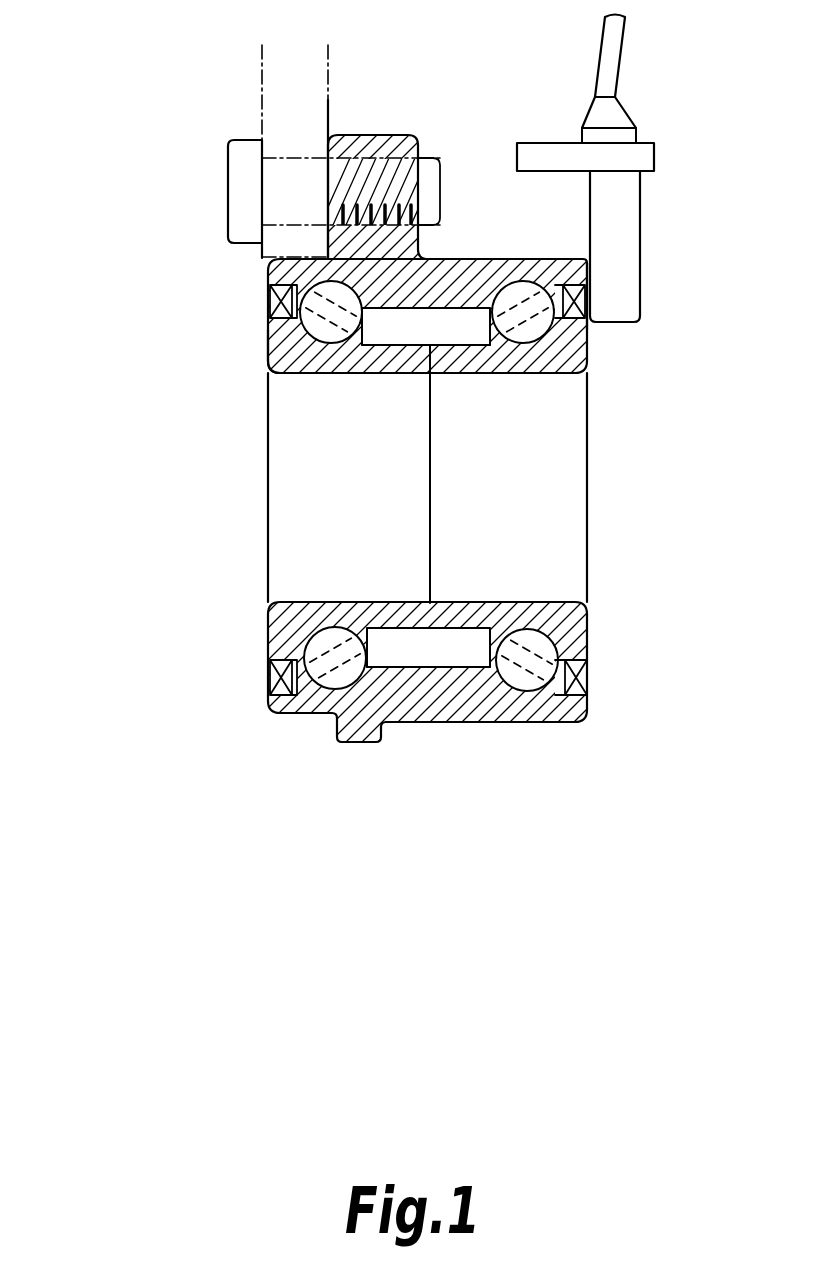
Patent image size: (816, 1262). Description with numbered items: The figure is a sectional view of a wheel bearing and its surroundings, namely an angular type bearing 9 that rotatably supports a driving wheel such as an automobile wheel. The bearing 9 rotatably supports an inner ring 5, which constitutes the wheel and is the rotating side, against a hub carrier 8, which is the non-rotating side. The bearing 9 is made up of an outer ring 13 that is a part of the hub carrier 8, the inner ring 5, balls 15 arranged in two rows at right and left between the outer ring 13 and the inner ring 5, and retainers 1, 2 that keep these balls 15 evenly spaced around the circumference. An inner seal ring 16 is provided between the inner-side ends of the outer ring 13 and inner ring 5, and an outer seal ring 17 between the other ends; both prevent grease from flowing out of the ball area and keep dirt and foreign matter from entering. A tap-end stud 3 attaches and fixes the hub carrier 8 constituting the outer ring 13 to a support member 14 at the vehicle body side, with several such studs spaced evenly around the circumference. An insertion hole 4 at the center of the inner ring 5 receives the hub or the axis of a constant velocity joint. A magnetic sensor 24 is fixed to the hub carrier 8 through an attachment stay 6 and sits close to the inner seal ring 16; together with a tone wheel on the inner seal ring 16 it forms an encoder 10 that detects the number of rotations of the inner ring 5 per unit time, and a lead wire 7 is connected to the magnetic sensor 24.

The retainer 1 is at (398, 347).
The retainer 2 is at (480, 310).
The tap-end stud 3 is at (232, 180).
The insertion hole 4 is at (288, 468).
The inner ring 5 is at (290, 603).
The attachment stay 6 is at (535, 152).
The lead wire 7 is at (610, 58).
The hub carrier 8 is at (480, 779).
The angular type bearing 9 is at (268, 356).
The encoder 10 is at (593, 328).
The outer ring 13 is at (474, 724).
The support member 14 is at (330, 100).
The balls 15 is at (492, 645).
The inner seal ring 16 is at (588, 678).
The outer seal ring 17 is at (278, 300).
The magnetic sensor 24 is at (612, 224).